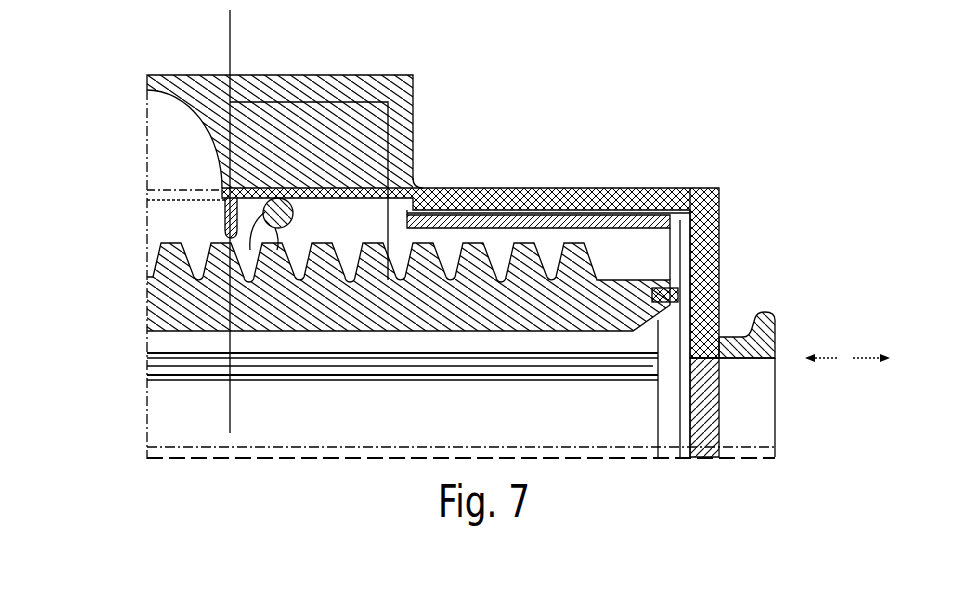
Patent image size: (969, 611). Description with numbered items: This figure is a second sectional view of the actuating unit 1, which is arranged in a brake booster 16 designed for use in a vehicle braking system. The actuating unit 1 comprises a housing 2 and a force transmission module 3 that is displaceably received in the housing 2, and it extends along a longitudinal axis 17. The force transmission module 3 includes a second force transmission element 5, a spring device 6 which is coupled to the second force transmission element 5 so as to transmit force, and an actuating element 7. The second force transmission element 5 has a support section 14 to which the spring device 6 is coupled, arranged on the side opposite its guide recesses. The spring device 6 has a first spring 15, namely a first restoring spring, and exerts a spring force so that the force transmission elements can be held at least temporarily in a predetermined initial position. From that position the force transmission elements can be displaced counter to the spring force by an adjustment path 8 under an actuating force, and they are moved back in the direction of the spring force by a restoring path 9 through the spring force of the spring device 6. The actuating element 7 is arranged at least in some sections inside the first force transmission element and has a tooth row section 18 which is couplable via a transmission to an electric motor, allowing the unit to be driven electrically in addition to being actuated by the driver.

The actuating unit 1 is at (745, 200).
The housing 2 is at (708, 430).
The force transmission module 3 is at (562, 172).
The second force transmission element 5 is at (462, 198).
The spring device 6 is at (258, 228).
The actuating element 7 is at (175, 300).
The adjustment path 8 is at (809, 357).
The restoring path 9 is at (874, 357).
The support section 14 is at (413, 185).
The first spring 15 is at (248, 236).
The brake booster 16 is at (135, 128).
The longitudinal axis 17 is at (757, 448).
The tooth row section 18 is at (563, 248).